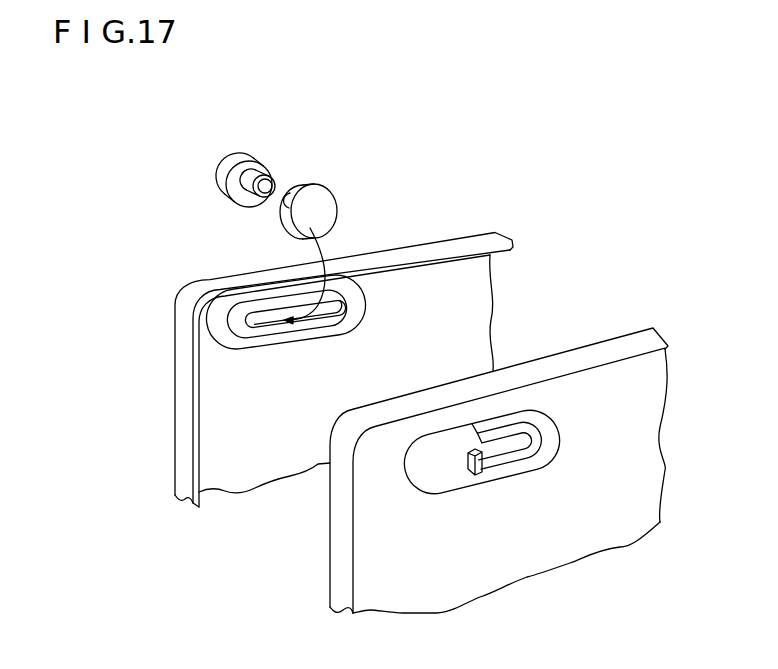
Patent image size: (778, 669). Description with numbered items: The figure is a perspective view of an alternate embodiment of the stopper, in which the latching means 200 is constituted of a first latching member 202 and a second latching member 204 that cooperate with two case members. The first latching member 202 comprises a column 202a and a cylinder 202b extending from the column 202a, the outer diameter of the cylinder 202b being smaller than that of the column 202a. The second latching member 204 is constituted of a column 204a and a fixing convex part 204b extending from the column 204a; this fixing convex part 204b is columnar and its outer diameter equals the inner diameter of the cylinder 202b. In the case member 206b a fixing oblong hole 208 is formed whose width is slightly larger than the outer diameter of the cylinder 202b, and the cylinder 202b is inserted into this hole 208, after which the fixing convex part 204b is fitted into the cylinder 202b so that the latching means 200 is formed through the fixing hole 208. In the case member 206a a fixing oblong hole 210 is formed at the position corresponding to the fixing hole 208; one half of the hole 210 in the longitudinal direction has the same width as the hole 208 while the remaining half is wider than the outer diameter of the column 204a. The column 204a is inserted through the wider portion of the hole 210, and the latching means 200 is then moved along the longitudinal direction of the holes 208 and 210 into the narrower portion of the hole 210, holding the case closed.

The latching means 200 is at (300, 171).
The first latching member 202 is at (241, 138).
The column 202a is at (219, 177).
The cylinder 202b is at (271, 178).
The second latching member 204 is at (341, 222).
The column 204a is at (320, 200).
The fixing convex part 204b is at (281, 204).
The case member 206a is at (340, 570).
The case member 206b is at (178, 420).
The fixing oblong hole 208 is at (265, 322).
The fixing oblong hole 210 is at (433, 470).